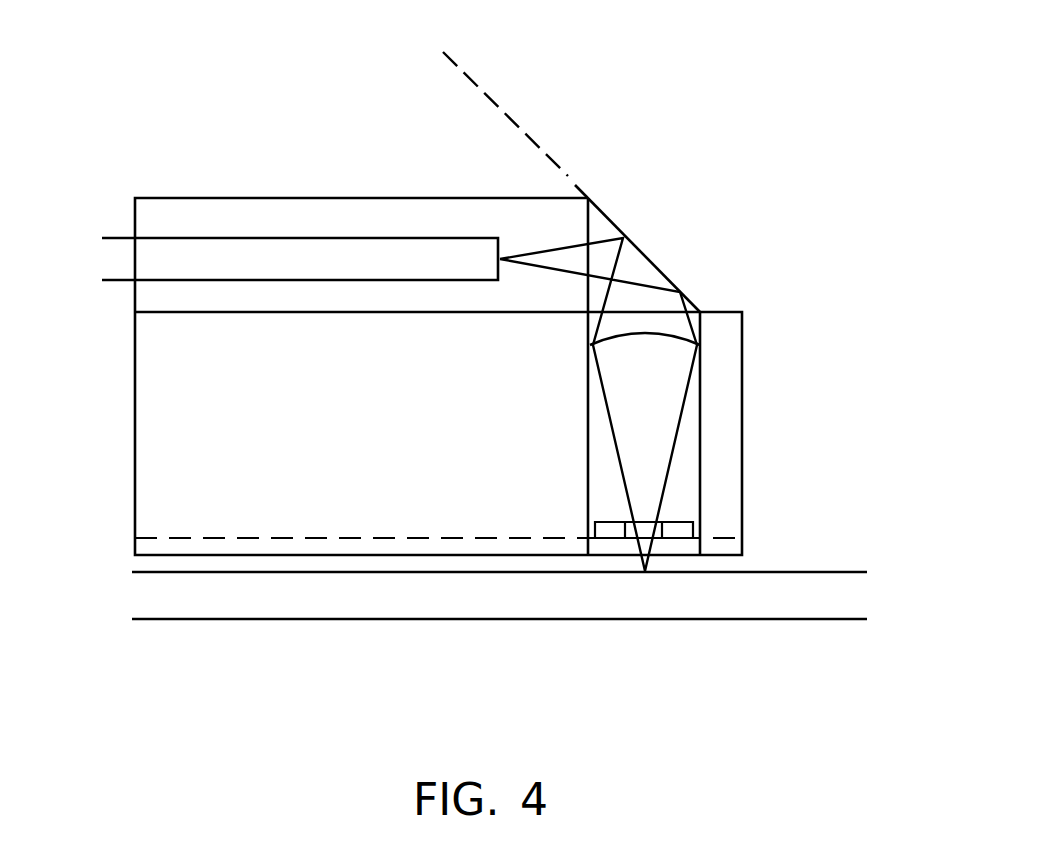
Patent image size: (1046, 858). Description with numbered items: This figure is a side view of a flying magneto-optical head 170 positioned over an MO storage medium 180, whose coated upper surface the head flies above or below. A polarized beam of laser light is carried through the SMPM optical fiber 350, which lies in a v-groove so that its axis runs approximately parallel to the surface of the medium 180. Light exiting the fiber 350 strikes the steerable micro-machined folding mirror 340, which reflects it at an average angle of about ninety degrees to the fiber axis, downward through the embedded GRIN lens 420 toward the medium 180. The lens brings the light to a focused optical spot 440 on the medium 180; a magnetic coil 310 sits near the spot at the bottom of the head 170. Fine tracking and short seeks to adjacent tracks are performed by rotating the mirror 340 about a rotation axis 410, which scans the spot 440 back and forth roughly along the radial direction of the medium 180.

The flying magneto-optical head 170 is at (79, 486).
The MO storage medium 180 is at (833, 593).
The magnetic coil 310 is at (702, 524).
The steerable micro-machined folding mirror 340 is at (658, 234).
The SMPM optical fiber 350 is at (220, 225).
The rotation axis 410 is at (499, 83).
The GRIN lens 420 is at (704, 454).
The focused optical spot 440 is at (643, 566).